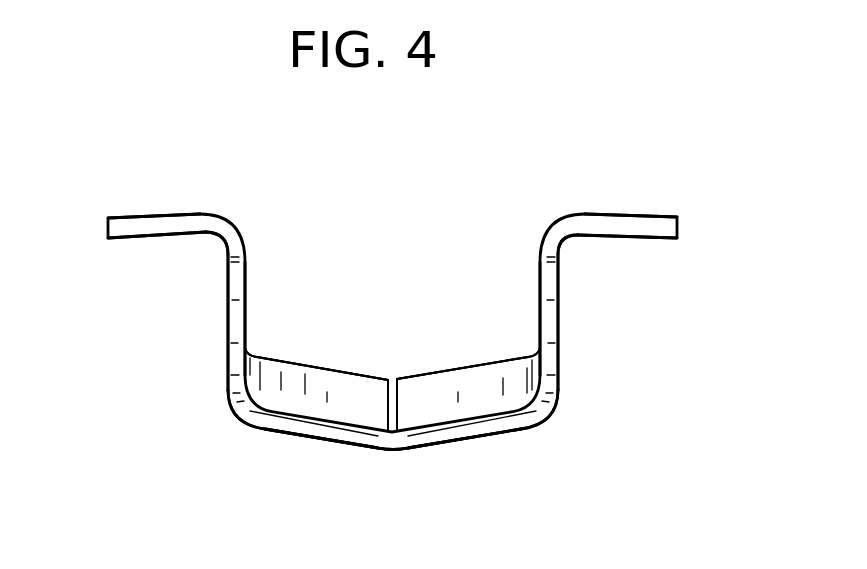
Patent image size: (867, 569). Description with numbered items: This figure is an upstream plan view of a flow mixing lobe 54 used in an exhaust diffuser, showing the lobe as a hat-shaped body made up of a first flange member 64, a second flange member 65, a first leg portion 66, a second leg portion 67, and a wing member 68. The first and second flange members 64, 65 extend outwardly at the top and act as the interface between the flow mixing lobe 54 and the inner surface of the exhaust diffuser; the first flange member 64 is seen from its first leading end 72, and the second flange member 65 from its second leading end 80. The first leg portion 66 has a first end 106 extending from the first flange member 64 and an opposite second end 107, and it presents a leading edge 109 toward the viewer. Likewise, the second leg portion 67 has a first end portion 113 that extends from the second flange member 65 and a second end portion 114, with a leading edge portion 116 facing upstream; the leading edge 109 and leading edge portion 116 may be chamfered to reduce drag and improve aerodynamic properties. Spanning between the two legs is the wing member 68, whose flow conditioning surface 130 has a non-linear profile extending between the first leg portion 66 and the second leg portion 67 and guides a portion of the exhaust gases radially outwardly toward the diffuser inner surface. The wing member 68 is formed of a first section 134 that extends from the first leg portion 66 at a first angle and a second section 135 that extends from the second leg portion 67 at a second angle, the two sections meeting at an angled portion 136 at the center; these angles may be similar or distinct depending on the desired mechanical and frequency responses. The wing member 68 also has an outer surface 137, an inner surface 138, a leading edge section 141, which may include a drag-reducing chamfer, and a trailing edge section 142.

The flow mixing lobe 54 is at (208, 438).
The first flange member 64 is at (158, 178).
The second flange member 65 is at (584, 178).
The first leg portion 66 is at (195, 338).
The second leg portion 67 is at (582, 332).
The wing member 68 is at (500, 465).
The first leading end 72 is at (140, 231).
The second leading end 80 is at (653, 227).
The first end 106 is at (227, 399).
The second end 107 is at (223, 252).
The leading edge 109 is at (237, 309).
The first end portion 113 is at (558, 402).
The second end portion 114 is at (565, 250).
The leading edge portion 116 is at (560, 354).
The flow conditioning surface 130 is at (437, 340).
The first section 134 is at (301, 386).
The second section 135 is at (478, 372).
The angled portion 136 is at (397, 407).
The outer surface 137 is at (347, 447).
The inner surface 138 is at (370, 398).
The leading edge section 141 is at (512, 422).
The trailing edge section 142 is at (418, 373).